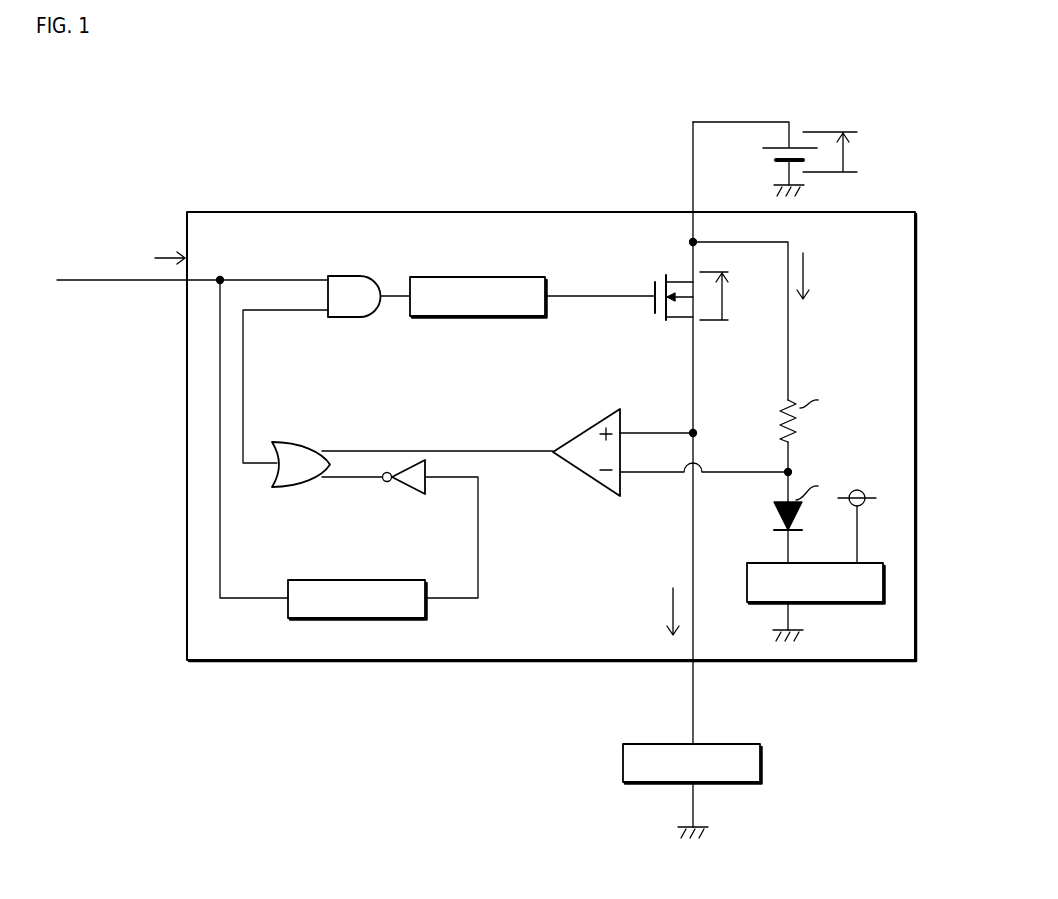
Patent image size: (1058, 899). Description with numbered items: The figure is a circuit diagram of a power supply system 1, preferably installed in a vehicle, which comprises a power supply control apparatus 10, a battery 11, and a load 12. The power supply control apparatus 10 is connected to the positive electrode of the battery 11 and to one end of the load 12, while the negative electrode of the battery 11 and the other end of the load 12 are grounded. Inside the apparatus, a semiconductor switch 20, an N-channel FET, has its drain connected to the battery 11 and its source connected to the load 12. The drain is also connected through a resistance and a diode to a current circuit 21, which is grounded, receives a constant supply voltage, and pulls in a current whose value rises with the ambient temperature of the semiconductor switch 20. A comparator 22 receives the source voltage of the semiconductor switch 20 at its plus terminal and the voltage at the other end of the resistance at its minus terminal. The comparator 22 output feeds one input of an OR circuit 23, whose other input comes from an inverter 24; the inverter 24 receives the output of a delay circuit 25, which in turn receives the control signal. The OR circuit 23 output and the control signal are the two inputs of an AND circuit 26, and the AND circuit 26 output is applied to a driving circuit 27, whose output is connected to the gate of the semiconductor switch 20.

The power supply system 1 is at (886, 93).
The power supply control apparatus 10 is at (330, 212).
The battery 11 is at (763, 152).
The load 12 is at (735, 744).
The semiconductor switch 20 is at (660, 275).
The current circuit 21 is at (845, 605).
The comparator 22 is at (578, 430).
The OR circuit 23 is at (308, 442).
The inverter 24 is at (402, 490).
The delay circuit 25 is at (378, 580).
The AND circuit 26 is at (353, 276).
The driving circuit 27 is at (516, 275).